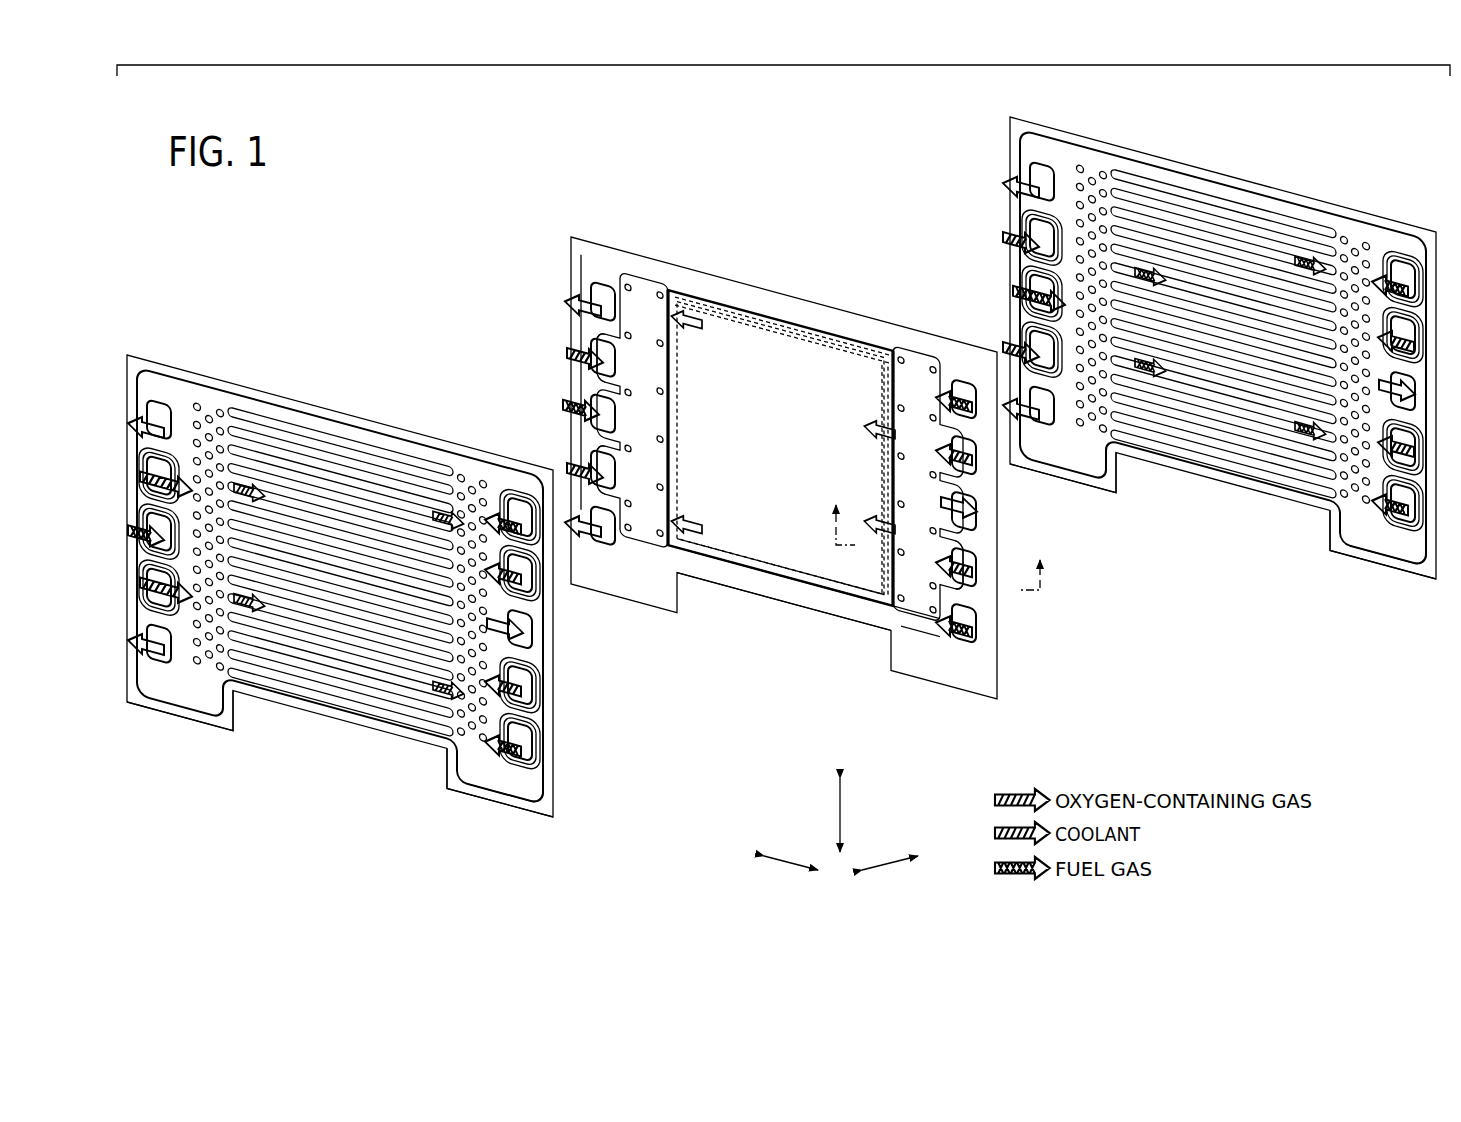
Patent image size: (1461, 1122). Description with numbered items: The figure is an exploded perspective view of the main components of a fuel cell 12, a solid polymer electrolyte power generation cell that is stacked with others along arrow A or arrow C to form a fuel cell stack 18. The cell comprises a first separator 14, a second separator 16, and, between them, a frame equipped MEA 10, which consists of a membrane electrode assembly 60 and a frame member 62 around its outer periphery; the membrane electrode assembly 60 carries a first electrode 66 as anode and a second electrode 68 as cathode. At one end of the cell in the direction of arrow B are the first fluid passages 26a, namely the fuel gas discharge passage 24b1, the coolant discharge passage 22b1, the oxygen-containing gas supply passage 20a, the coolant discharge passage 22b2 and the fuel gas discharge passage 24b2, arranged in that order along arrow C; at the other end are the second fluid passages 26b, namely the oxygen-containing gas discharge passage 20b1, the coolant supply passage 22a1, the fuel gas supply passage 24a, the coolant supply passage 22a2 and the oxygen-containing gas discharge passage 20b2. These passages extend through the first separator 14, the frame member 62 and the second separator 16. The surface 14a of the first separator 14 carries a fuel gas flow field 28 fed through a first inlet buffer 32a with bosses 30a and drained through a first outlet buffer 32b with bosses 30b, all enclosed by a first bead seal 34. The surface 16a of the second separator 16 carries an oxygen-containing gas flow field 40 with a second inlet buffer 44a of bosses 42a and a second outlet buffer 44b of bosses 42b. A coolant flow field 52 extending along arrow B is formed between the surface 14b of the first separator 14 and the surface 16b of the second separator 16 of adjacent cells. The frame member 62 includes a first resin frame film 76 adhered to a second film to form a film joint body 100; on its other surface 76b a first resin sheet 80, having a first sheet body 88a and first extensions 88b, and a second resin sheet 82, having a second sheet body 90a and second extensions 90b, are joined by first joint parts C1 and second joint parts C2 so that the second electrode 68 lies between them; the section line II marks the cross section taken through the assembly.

The frame equipped membrane electrode assembly 10 is at (578, 226).
The fuel cell 12 is at (348, 190).
The first separator 14 is at (1004, 122).
The surface of the first separator 14a is at (1340, 551).
The surface of the first separator 14b is at (1118, 485).
The second separator 16 is at (132, 343).
The surface of the second separator 16a is at (455, 792).
The surface of the second separator 16b is at (236, 723).
The fuel cell stack 18 is at (388, 190).
The oxygen-containing gas supply passage 20a is at (533, 636).
The oxygen-containing gas discharge passage 20b1 is at (166, 415).
The oxygen-containing gas discharge passage 20b2 is at (163, 655).
The coolant supply passage 22a1 is at (166, 468).
The coolant supply passage 22a2 is at (171, 592).
The coolant discharge passage 22b1 is at (531, 586).
The coolant discharge passage 22b2 is at (529, 689).
The fuel gas supply passage 24a is at (166, 538).
The fuel gas discharge passage 24b1 is at (523, 510).
The fuel gas discharge passage 24b2 is at (531, 749).
The first fluid passages 26a is at (519, 777).
The second fluid passages 26b is at (154, 388).
The fuel gas flow field 28 is at (1157, 218).
The bosses 30a is at (1080, 172).
The bosses 30b is at (1366, 245).
The first inlet buffer 32a is at (1106, 172).
The first outlet buffer 32b is at (1345, 228).
The first bead seal 34 is at (1232, 182).
The oxygen-containing gas flow field 40 is at (372, 462).
The bosses 42a is at (483, 488).
The bosses 42b is at (197, 403).
The second inlet buffer 44a is at (462, 492).
The second outlet buffer 44b is at (224, 402).
The coolant flow field 52 is at (352, 460).
The membrane electrode assembly 60 is at (719, 287).
The frame member 62 is at (760, 287).
The first electrode 66 is at (800, 345).
The second electrode 68 is at (743, 566).
The first resin frame film 76 is at (850, 599).
The another surface of the first resin frame film 76b is at (800, 589).
The first resin sheet 80 is at (912, 360).
The second resin sheet 82 is at (640, 297).
The first sheet body 88a is at (922, 608).
The first extensions 88b is at (969, 613).
The second sheet body 90a is at (665, 505).
The second extensions 90b is at (590, 318).
The film joint body 100 is at (773, 603).
The first joint parts C1 is at (900, 472).
The second joint parts C2 is at (680, 410).
The section line II is at (935, 547).
The arrow A is at (890, 850).
The arrow B is at (791, 850).
The arrow C is at (849, 815).